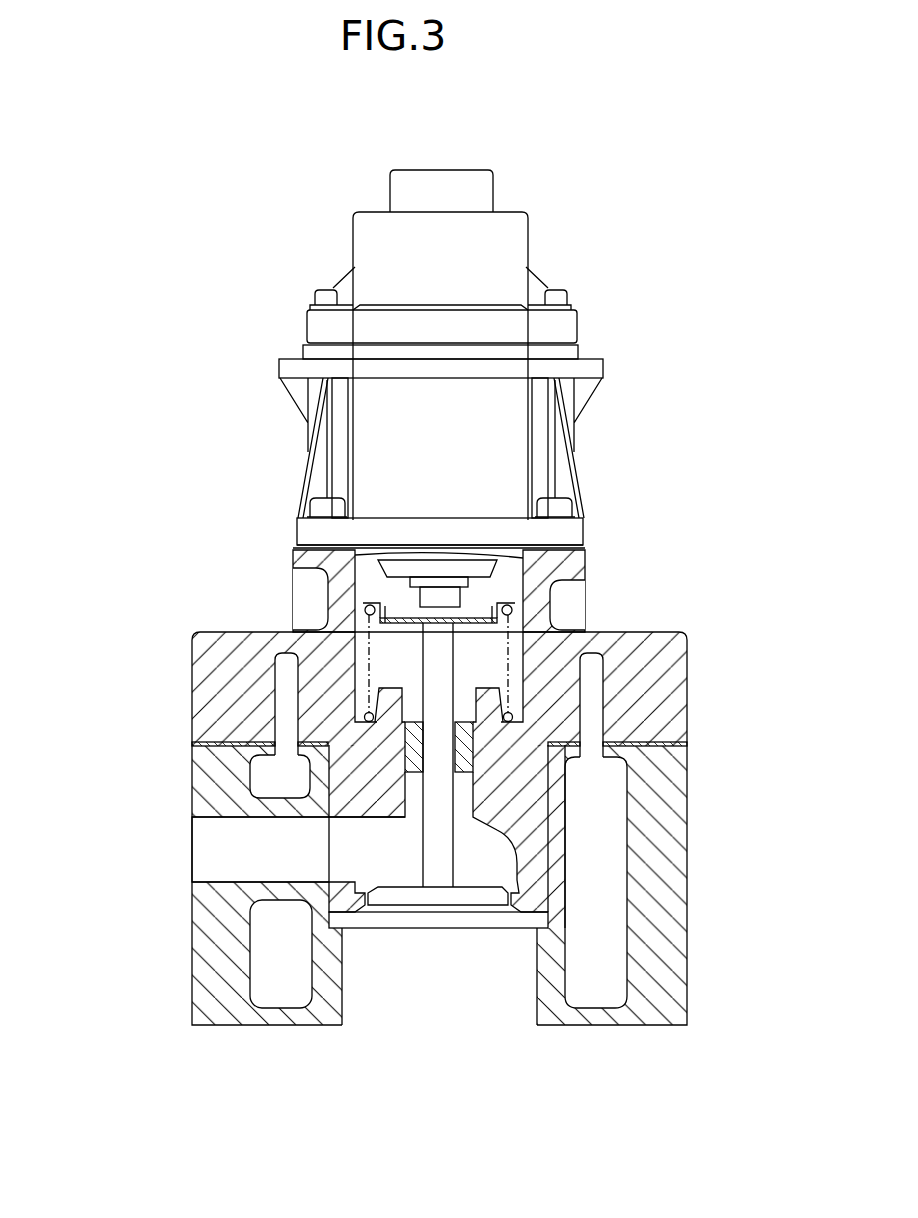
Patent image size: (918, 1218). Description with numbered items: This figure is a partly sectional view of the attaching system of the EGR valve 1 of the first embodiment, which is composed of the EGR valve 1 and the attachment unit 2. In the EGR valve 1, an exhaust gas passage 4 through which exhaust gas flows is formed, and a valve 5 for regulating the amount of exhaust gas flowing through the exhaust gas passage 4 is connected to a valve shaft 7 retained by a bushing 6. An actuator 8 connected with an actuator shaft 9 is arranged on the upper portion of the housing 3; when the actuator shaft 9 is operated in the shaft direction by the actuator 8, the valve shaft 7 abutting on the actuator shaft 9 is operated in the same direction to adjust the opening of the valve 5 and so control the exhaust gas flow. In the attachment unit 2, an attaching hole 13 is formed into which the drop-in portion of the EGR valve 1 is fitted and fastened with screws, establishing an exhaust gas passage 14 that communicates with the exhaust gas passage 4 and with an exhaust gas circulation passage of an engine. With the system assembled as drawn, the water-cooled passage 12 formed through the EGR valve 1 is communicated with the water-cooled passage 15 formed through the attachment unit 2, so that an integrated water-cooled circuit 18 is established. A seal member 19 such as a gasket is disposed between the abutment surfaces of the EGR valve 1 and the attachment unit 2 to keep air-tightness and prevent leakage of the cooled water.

The EGR valve 1 is at (178, 153).
The attachment unit 2 is at (82, 908).
The housing 3 is at (582, 572).
The exhaust gas passage 4 is at (405, 860).
The valve 5 is at (487, 897).
The bushing 6 is at (418, 777).
The valve shaft 7 is at (440, 657).
The actuator 8 is at (357, 212).
The actuator shaft 9 is at (437, 595).
The water-cooled passage 12 is at (288, 683).
The attaching hole 13 is at (573, 850).
The exhaust gas passage 14 is at (208, 868).
The water-cooled passage 15 is at (268, 773).
The integrated water-cooled circuit 18 is at (126, 660).
The seal member 19 is at (687, 742).